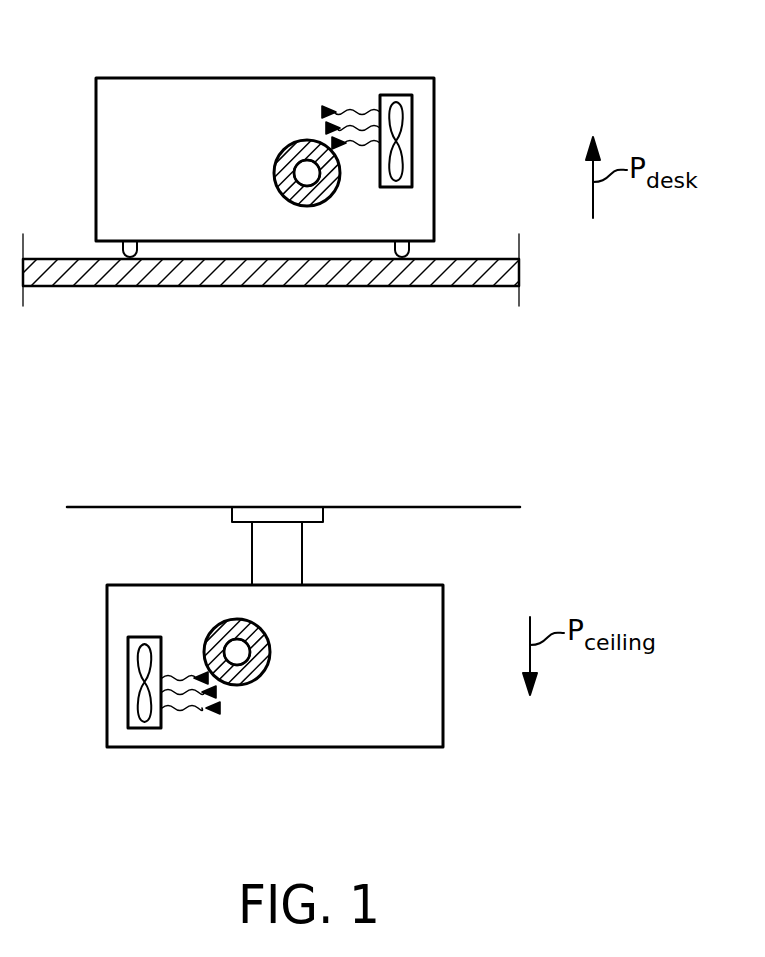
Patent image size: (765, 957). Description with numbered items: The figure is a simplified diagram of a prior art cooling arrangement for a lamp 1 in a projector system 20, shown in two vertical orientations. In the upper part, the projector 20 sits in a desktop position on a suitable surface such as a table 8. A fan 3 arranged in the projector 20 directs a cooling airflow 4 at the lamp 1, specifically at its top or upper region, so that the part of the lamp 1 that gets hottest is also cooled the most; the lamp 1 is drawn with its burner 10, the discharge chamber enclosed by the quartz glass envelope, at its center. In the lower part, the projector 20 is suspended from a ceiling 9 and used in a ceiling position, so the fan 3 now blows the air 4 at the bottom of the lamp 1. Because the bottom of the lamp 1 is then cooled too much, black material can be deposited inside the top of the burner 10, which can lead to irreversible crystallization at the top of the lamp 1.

The projector system 20 is at (135, 77).
The lamp 1 is at (278, 157).
The burner 10 is at (307, 168).
The fan 3 is at (412, 130).
The cooling airflow 4 is at (366, 112).
The table 8 is at (450, 275).
The ceiling 9 is at (480, 508).